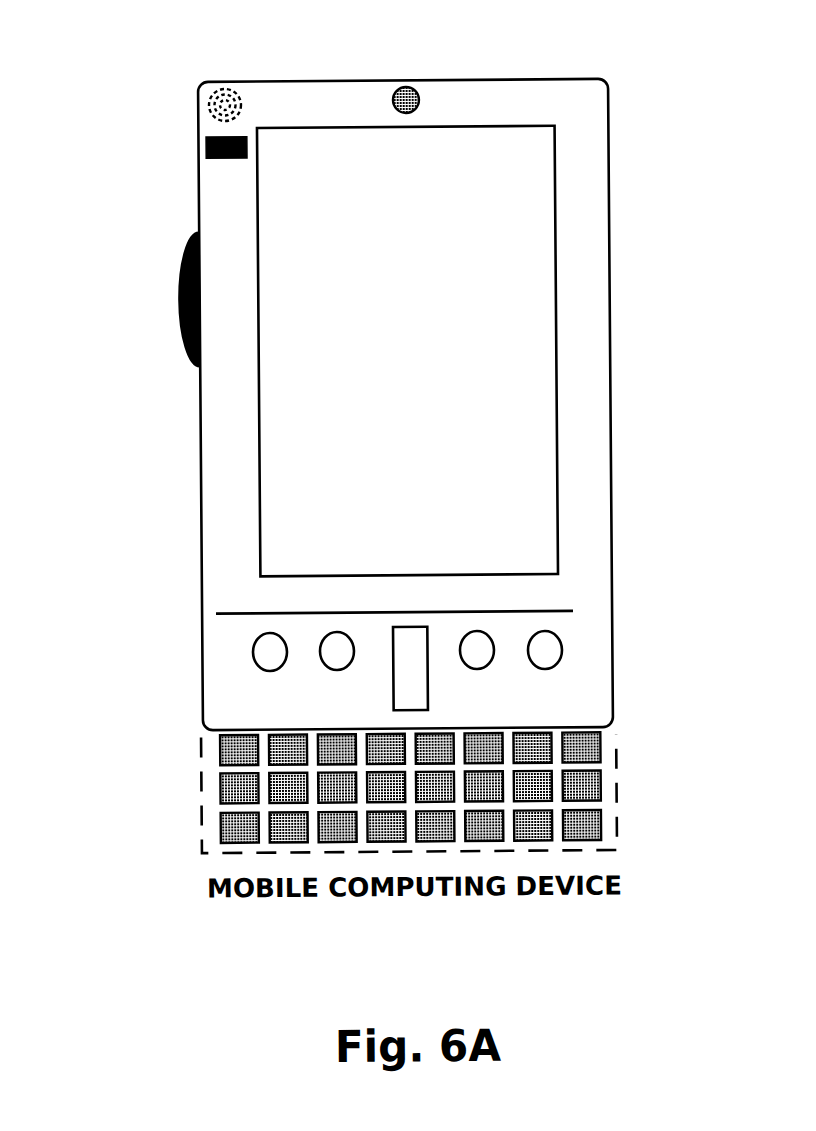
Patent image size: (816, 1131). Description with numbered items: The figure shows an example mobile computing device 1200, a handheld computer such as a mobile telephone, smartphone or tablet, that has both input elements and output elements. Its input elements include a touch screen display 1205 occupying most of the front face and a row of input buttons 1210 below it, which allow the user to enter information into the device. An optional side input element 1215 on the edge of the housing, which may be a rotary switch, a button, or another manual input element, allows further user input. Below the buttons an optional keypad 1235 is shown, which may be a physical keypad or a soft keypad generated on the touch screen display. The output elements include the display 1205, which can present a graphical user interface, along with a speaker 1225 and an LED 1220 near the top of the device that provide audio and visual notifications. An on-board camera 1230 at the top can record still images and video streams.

The mobile computing device 1200 is at (612, 97).
The touch screen display 1205 is at (284, 511).
The input buttons 1210 is at (546, 663).
The side input element 1215 is at (176, 306).
The LED 1220 is at (209, 136).
The speaker 1225 is at (209, 96).
The on-board camera 1230 is at (420, 98).
The keypad 1235 is at (199, 818).